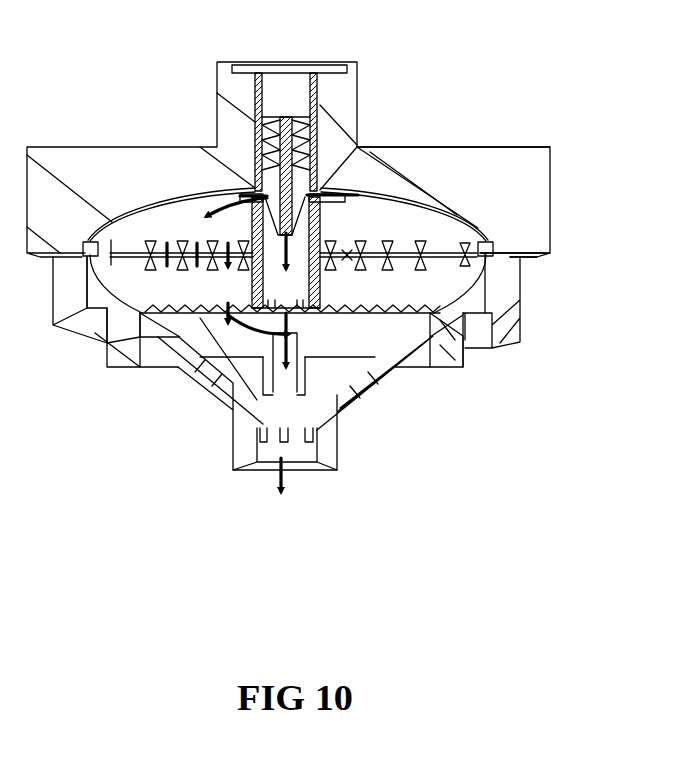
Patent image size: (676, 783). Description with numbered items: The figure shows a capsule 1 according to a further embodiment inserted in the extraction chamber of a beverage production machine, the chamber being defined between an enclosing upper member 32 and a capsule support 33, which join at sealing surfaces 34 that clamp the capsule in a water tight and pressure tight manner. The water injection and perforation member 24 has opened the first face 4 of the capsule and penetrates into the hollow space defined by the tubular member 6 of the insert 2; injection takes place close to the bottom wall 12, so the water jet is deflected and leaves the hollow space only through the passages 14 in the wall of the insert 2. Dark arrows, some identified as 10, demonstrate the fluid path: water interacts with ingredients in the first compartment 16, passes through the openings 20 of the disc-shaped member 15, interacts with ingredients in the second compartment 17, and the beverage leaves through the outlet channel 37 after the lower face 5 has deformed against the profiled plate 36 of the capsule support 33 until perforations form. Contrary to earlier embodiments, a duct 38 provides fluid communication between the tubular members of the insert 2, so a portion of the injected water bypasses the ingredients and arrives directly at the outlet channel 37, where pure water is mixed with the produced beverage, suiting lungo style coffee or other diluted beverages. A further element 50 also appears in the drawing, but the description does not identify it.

The capsule 1 is at (430, 225).
The insert 2 is at (312, 196).
The first face 4 is at (403, 212).
The lower face 5 is at (142, 300).
The tubular member 6 is at (320, 210).
The dark arrows 10 is at (292, 493).
The bottom wall 12 is at (305, 327).
The passages 14 is at (253, 190).
The disc-shaped member 15 is at (462, 216).
The first compartment 16 is at (172, 237).
The second compartment 17 is at (138, 303).
The openings 20 is at (140, 300).
The water injection and perforation member 24 is at (286, 92).
The enclosing upper member 32 is at (455, 160).
The capsule support 33 is at (453, 338).
The sealing surfaces 34 is at (520, 258).
The profiled plate 36 is at (235, 315).
The outlet channel 37 is at (262, 325).
The duct 38 is at (112, 222).
The flow arrows 50 is at (280, 328).